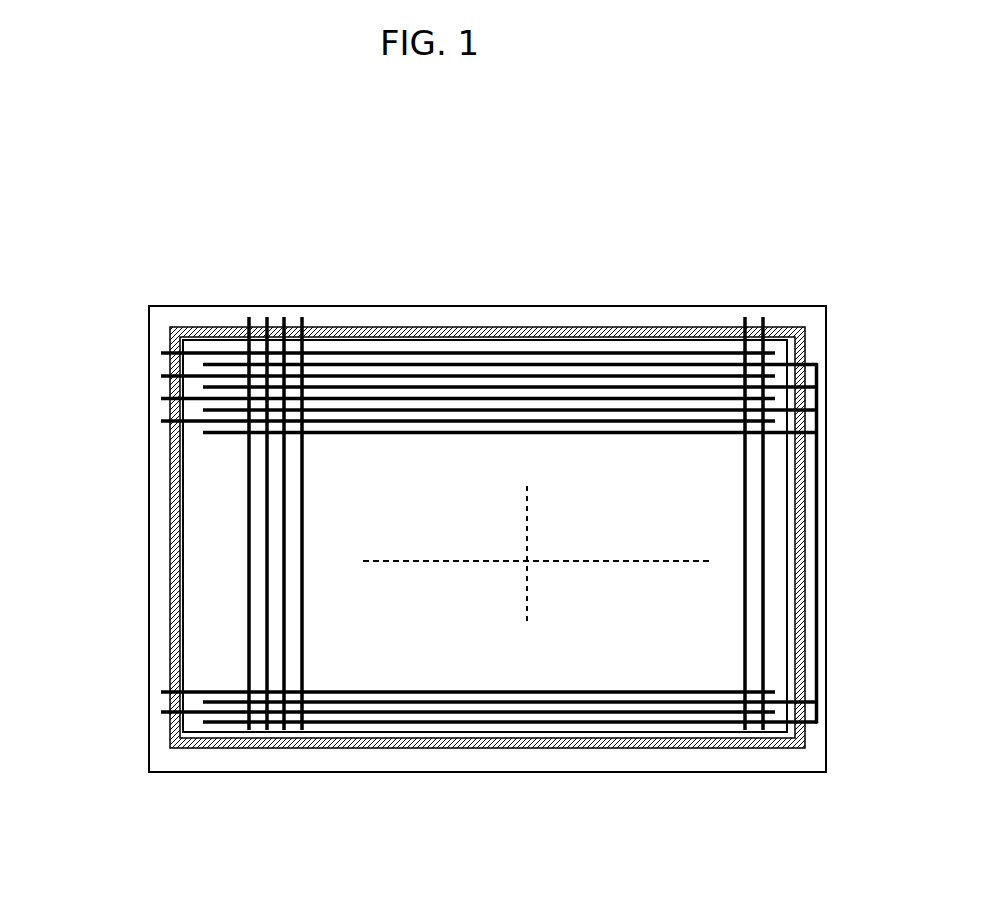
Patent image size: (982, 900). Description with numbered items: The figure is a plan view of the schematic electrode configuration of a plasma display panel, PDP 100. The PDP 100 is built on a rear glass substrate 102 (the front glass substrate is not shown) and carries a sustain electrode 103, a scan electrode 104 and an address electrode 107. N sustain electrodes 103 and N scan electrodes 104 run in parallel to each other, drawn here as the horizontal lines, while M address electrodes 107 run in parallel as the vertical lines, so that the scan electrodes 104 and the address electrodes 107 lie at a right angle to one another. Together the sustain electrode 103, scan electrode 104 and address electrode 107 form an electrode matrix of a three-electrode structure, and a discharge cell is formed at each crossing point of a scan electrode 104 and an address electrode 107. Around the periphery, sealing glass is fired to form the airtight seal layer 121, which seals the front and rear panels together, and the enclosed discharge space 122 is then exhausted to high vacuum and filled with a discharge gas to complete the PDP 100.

The PDP 100 is at (521, 508).
The rear glass substrate 102 is at (788, 307).
The sustain electrode 103 is at (215, 433).
The scan electrode 104 is at (163, 355).
The address electrode 107 is at (250, 328).
The airtight seal layer 121 is at (495, 328).
The discharge space 122 is at (572, 457).